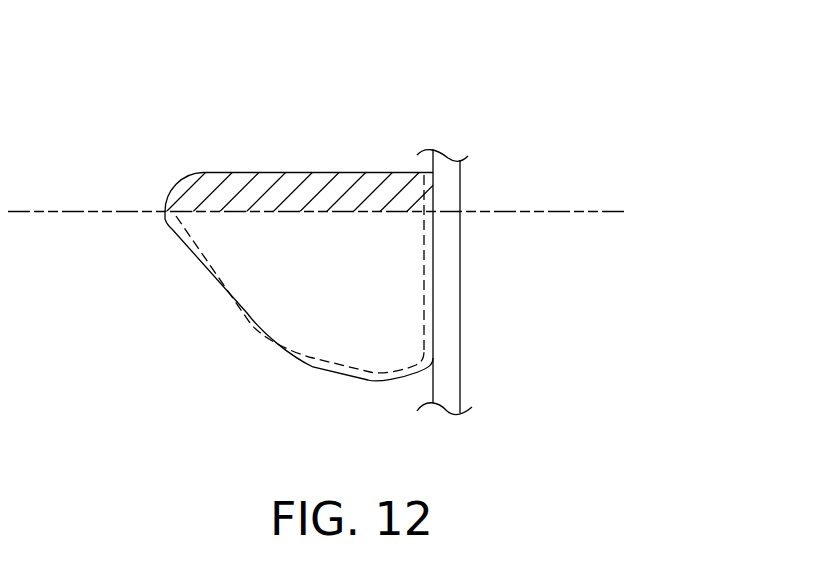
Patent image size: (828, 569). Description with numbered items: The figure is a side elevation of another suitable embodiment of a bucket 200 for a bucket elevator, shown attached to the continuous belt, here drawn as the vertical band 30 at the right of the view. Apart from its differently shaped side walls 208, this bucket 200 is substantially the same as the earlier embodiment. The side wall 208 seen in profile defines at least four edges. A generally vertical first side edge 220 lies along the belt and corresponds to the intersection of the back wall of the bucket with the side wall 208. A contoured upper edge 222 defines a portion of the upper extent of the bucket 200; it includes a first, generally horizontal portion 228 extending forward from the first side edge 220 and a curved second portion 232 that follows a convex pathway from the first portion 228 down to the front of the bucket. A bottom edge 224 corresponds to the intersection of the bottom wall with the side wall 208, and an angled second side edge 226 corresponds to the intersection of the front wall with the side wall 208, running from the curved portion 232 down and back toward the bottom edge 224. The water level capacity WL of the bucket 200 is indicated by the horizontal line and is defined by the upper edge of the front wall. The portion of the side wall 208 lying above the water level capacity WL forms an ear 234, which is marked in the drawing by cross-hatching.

The bucket 200 is at (372, 76).
The wall 30 is at (447, 275).
The side wall 208 is at (362, 312).
The first side edge 220 is at (434, 237).
The contoured upper edge 222 is at (420, 172).
The bottom edge 224 is at (390, 380).
The second side edge 226 is at (213, 278).
The first portion 228 is at (278, 172).
The curved second portion 232 is at (178, 188).
The ear 234 is at (233, 188).
The water level capacity WL is at (600, 212).